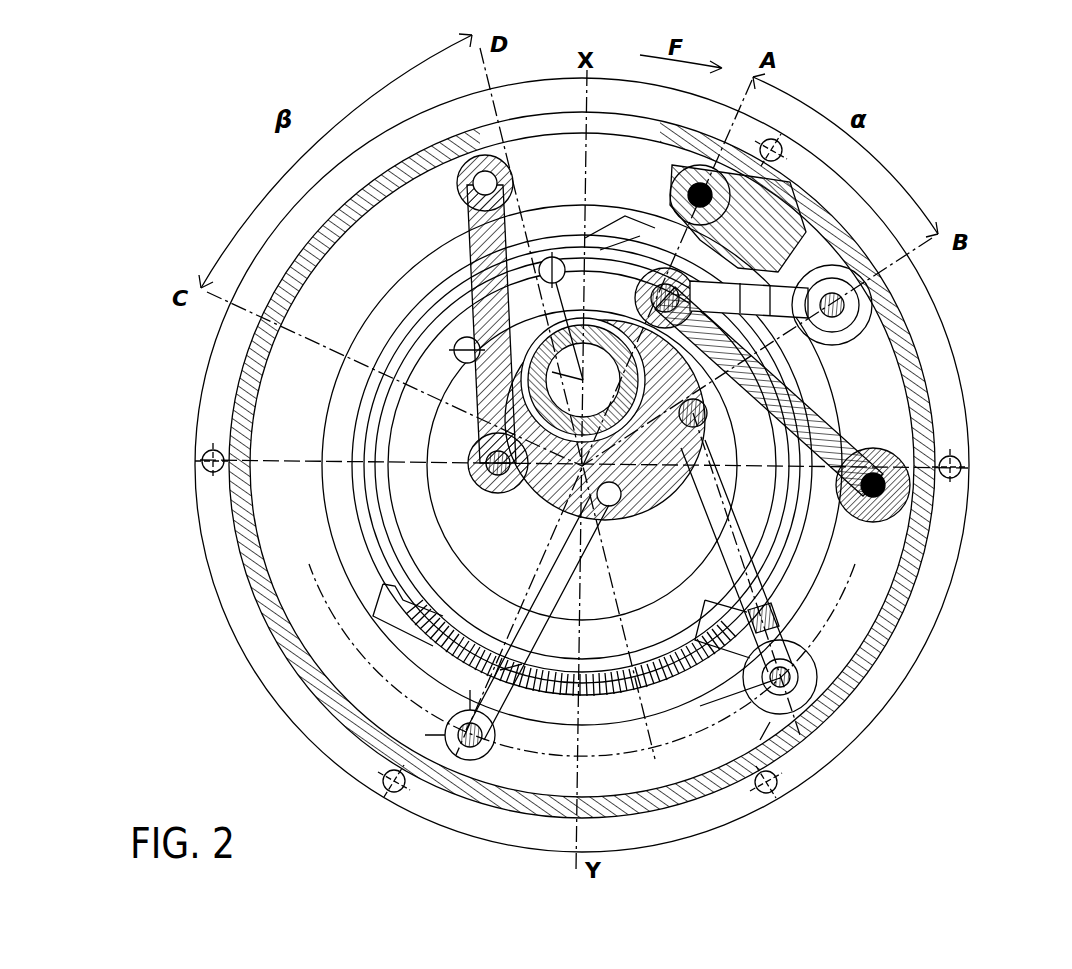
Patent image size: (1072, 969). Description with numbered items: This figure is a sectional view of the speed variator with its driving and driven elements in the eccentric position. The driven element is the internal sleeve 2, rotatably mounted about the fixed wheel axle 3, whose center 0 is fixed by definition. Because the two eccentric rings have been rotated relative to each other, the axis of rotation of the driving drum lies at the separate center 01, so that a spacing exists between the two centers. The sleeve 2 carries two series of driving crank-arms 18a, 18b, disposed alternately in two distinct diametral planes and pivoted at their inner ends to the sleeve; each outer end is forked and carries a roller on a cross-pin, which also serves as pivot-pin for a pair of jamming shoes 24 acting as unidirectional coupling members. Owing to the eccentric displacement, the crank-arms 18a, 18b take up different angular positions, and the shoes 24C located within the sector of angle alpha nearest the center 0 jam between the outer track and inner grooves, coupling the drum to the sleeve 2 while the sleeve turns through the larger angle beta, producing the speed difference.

The internal sleeve 2 is at (659, 480).
The axle 3 is at (598, 338).
The driving crank-arms 18a is at (845, 405).
The driving crank-arms 18b is at (735, 272).
The jamming shoes 24 is at (877, 357).
The jamming shoes located within sector alpha 24C is at (770, 202).
The center O 0 is at (563, 390).
The center O1 01 is at (560, 503).